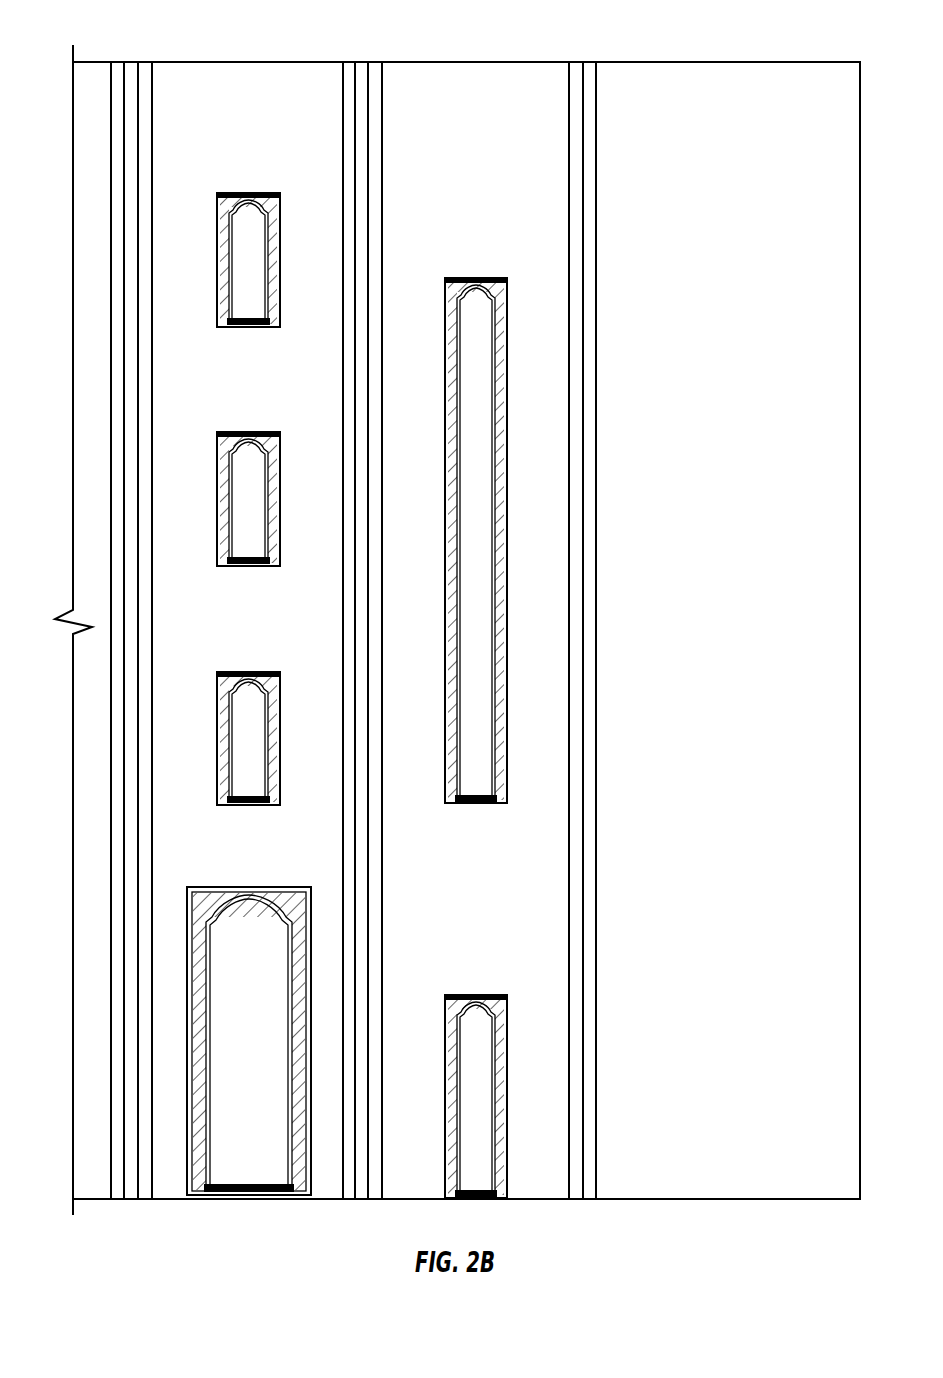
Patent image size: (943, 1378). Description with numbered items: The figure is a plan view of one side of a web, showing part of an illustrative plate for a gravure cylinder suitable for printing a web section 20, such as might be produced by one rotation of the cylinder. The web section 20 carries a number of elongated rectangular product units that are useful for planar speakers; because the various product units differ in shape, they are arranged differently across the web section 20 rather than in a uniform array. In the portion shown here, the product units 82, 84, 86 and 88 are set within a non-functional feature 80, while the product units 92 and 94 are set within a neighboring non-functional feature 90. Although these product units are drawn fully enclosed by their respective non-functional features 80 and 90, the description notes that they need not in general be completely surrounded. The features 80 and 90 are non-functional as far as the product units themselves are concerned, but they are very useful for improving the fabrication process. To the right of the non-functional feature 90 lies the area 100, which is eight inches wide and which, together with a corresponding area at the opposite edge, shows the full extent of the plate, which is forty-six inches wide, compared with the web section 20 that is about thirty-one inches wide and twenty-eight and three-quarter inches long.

The web section 20 is at (596, 37).
The non-functional feature 80 is at (190, 98).
The product unit 82 is at (250, 193).
The product unit 84 is at (250, 432).
The product unit 86 is at (250, 672).
The product unit 88 is at (240, 887).
The non-functional feature 90 is at (452, 98).
The product unit 92 is at (465, 278).
The product unit 94 is at (480, 995).
The area 100 is at (652, 97).